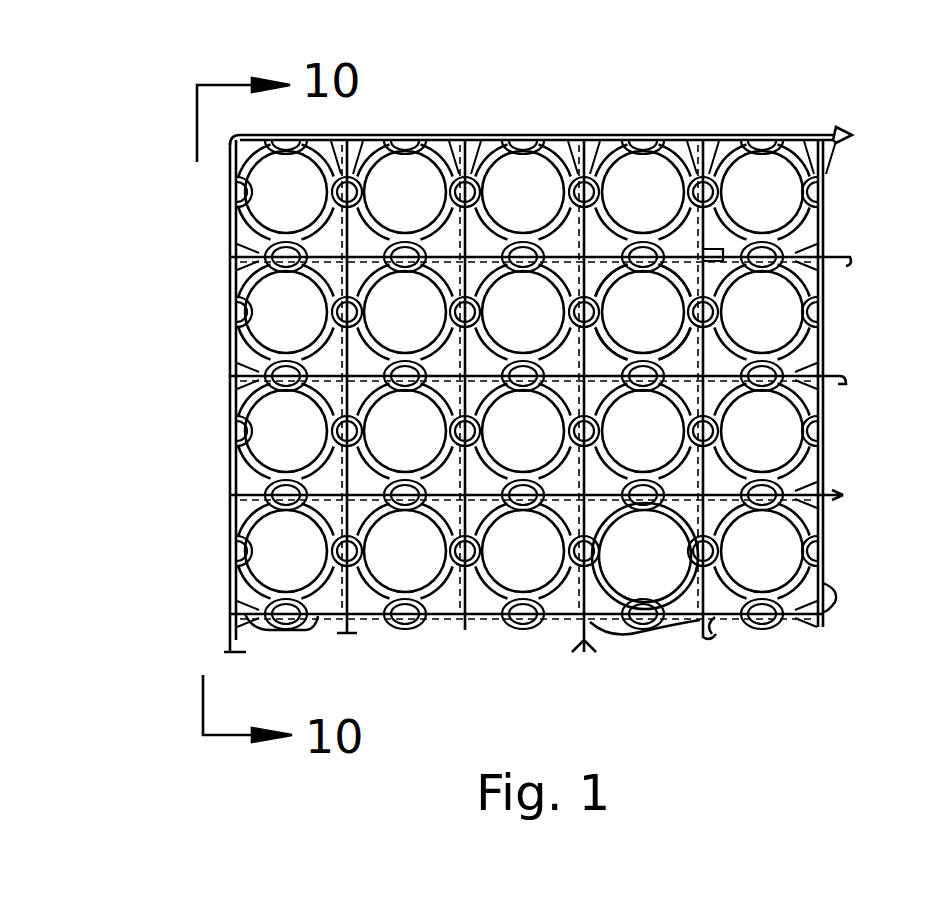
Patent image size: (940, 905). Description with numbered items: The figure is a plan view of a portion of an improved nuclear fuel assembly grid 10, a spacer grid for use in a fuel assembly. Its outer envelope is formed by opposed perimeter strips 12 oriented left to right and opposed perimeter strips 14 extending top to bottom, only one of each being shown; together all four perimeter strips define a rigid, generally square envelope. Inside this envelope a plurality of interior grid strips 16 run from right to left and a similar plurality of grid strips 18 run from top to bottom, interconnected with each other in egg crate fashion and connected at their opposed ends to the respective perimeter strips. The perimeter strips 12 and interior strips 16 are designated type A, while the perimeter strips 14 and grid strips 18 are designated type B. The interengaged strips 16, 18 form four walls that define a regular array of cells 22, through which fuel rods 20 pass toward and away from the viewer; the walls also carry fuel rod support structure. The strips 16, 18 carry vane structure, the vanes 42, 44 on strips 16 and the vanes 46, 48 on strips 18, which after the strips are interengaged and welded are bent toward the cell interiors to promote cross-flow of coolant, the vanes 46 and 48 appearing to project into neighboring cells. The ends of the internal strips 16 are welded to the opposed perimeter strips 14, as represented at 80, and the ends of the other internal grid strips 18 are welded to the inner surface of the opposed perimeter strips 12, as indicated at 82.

The nuclear fuel assembly grid 10 is at (516, 352).
The perimeter strip 12 is at (425, 135).
The perimeter strip 14 is at (228, 226).
The interior grid strip 16 is at (827, 366).
The grid strip 18 is at (715, 617).
The fuel rod 20 is at (652, 327).
The cell 22 is at (683, 357).
The vane 42 is at (690, 267).
The vane 44 is at (712, 253).
The vane 46 is at (568, 262).
The vane 48 is at (603, 180).
The weld 80 is at (232, 497).
The weld 82 is at (585, 137).